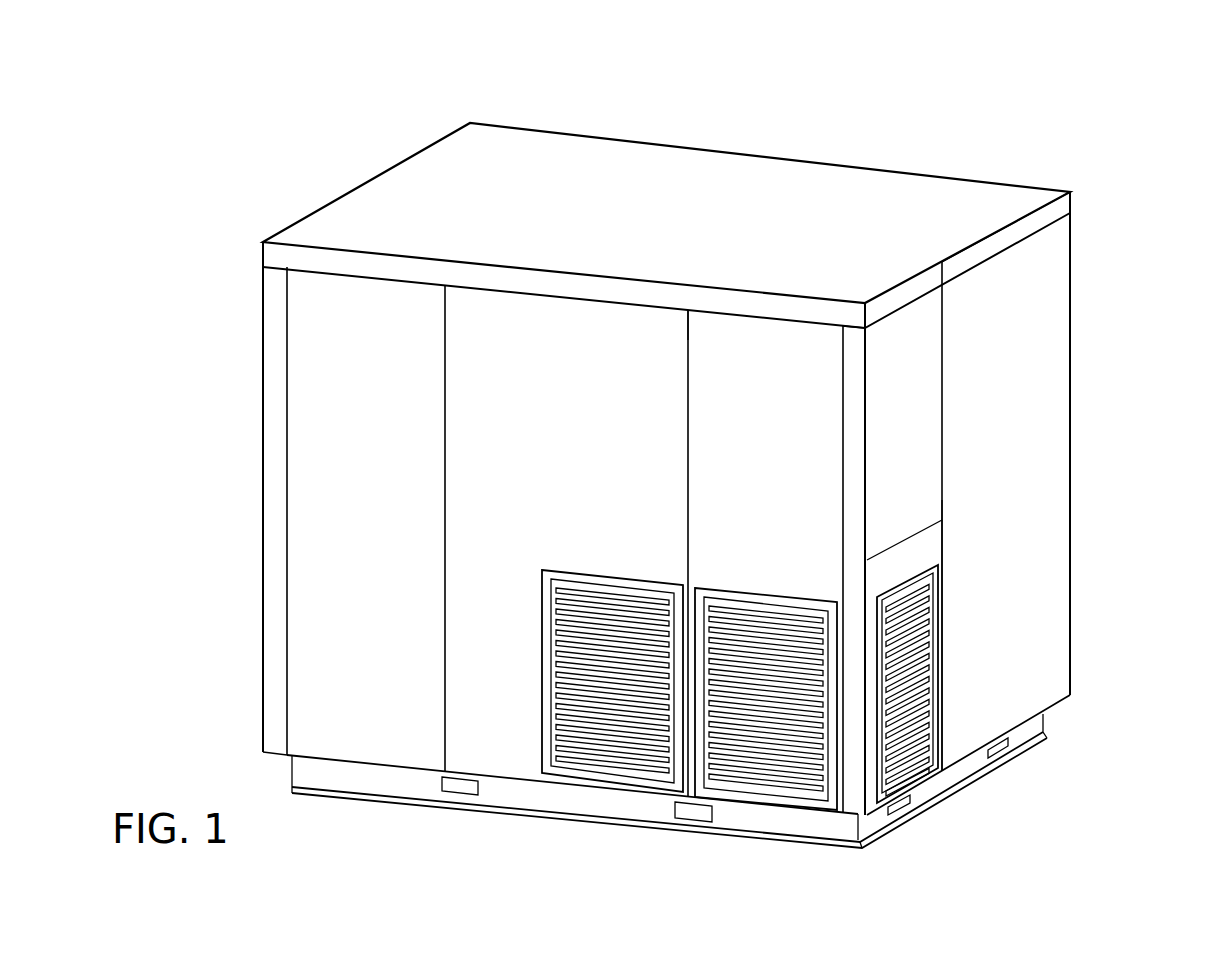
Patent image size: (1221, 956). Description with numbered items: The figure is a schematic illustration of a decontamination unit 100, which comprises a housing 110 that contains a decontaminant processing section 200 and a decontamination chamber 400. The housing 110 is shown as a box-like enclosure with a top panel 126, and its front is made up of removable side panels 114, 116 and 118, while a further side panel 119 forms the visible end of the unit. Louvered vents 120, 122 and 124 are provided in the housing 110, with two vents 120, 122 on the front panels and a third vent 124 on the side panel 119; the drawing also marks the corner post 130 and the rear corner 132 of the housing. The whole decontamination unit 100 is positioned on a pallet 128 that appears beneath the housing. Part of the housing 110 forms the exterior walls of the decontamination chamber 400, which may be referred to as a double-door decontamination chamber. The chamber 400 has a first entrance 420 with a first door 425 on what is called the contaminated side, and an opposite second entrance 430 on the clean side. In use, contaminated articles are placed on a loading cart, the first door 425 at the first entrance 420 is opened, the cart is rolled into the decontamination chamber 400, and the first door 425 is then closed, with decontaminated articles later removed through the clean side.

The decontamination unit 100 is at (693, 473).
The housing 110 is at (855, 165).
The removable side panel 114 is at (317, 467).
The removable side panel 116 is at (490, 475).
The removable side panel 118 is at (727, 470).
The side panel 119 is at (917, 423).
The vent 120 is at (542, 620).
The vent 122 is at (775, 595).
The vent 124 is at (917, 690).
The top panel 126 is at (538, 173).
The pallet 128 is at (575, 798).
The corner post 130 is at (850, 447).
The rear corner 132 is at (1073, 238).
The decontaminant processing section 200 is at (913, 532).
The decontamination chamber 400 is at (1032, 516).
The first entrance 420 is at (1047, 308).
The first door 425 is at (1035, 405).
The second entrance 430 is at (393, 168).